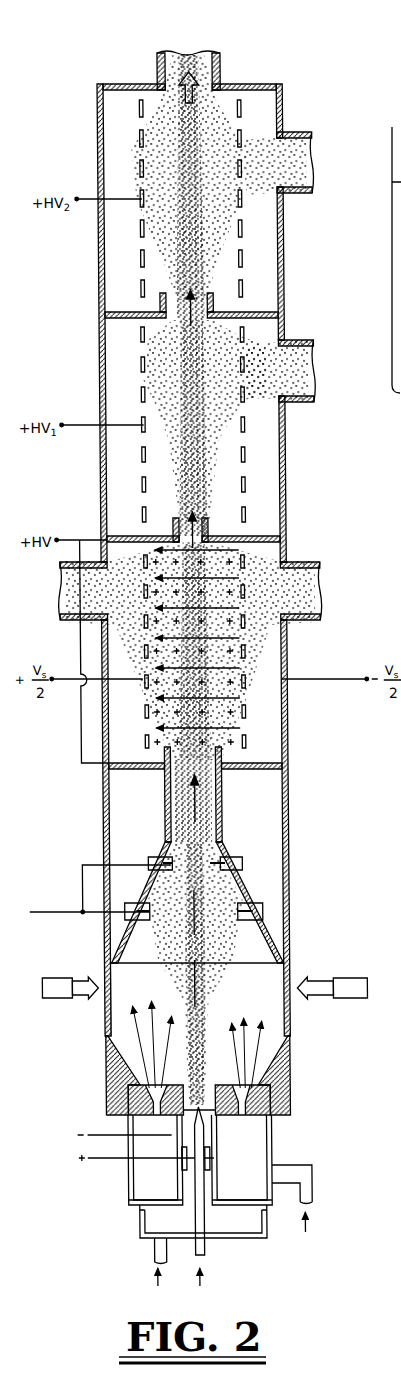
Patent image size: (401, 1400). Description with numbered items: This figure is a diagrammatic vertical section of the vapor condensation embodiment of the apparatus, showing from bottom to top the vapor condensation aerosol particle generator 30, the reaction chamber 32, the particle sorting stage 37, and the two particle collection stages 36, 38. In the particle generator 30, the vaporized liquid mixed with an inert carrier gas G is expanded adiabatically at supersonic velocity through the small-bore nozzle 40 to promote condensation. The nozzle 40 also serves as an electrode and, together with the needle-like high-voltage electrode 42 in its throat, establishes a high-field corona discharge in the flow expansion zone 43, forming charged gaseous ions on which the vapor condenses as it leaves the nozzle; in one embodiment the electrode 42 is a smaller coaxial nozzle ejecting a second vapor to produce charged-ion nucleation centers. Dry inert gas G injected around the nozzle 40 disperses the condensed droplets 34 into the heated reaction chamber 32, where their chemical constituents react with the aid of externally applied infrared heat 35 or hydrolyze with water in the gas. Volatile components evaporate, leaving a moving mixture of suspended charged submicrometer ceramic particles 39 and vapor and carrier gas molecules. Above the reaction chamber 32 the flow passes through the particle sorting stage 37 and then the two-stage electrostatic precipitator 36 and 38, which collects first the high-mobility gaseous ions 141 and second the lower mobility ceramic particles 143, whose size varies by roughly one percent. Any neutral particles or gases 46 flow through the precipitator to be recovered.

The particle generator 30 is at (205, 1172).
The reaction chamber 32 is at (92, 965).
The condensed droplets 34 is at (197, 1066).
The infrared heat 35 is at (204, 988).
The first stage electrostatic precipitator 36 is at (309, 313).
The particle sorting stage 37 is at (314, 546).
The second stage electrostatic precipitator 38 is at (311, 83).
The charged submicrometer ceramic particles 39 is at (192, 983).
The small-bore nozzle 40 is at (197, 1102).
The needle-like high-voltage electrode 42 is at (250, 1181).
The flow expansion zone 43 is at (179, 1098).
The neutral particles or gases 46 is at (185, 63).
The high-mobility gaseous ions 141 is at (275, 367).
The lower mobility ceramic particles 143 is at (272, 163).